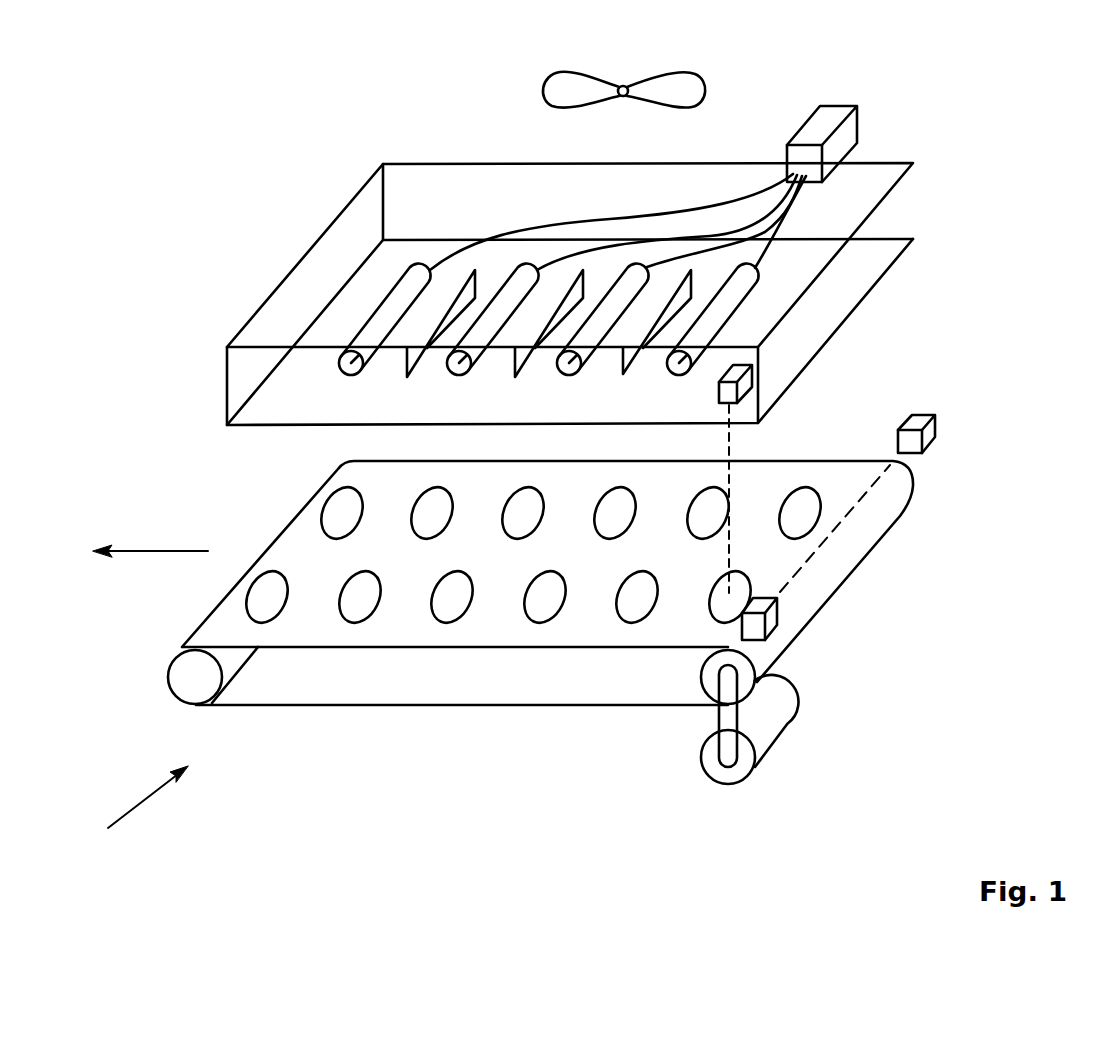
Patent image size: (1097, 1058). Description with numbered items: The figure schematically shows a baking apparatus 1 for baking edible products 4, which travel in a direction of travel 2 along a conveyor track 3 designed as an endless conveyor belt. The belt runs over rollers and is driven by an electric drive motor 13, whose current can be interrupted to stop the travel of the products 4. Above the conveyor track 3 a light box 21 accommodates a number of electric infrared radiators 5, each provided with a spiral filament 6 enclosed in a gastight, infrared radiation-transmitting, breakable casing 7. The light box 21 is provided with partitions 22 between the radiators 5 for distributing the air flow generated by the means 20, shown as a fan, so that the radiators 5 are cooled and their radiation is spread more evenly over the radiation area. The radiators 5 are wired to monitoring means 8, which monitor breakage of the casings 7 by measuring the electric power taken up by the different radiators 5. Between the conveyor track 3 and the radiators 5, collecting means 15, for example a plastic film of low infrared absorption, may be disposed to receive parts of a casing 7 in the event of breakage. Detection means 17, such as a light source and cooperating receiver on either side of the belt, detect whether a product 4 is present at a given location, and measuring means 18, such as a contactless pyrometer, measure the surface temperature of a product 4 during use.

The baking apparatus 1 is at (138, 807).
The direction of travel 2 is at (150, 536).
The conveyor track 3 is at (598, 609).
The edible products 4 is at (637, 598).
The electric infrared radiators 5 is at (430, 250).
The spiral filament 6 is at (520, 272).
The casing 7 is at (540, 280).
The monitoring means 8 is at (828, 122).
The electric drive motor 13 is at (765, 725).
The collecting means 15 is at (549, 258).
The detection means 17 is at (935, 413).
The measuring means 18 is at (742, 364).
The means for generating an air flow 20 is at (680, 90).
The light box 21 is at (282, 327).
The partitions 22 is at (413, 358).